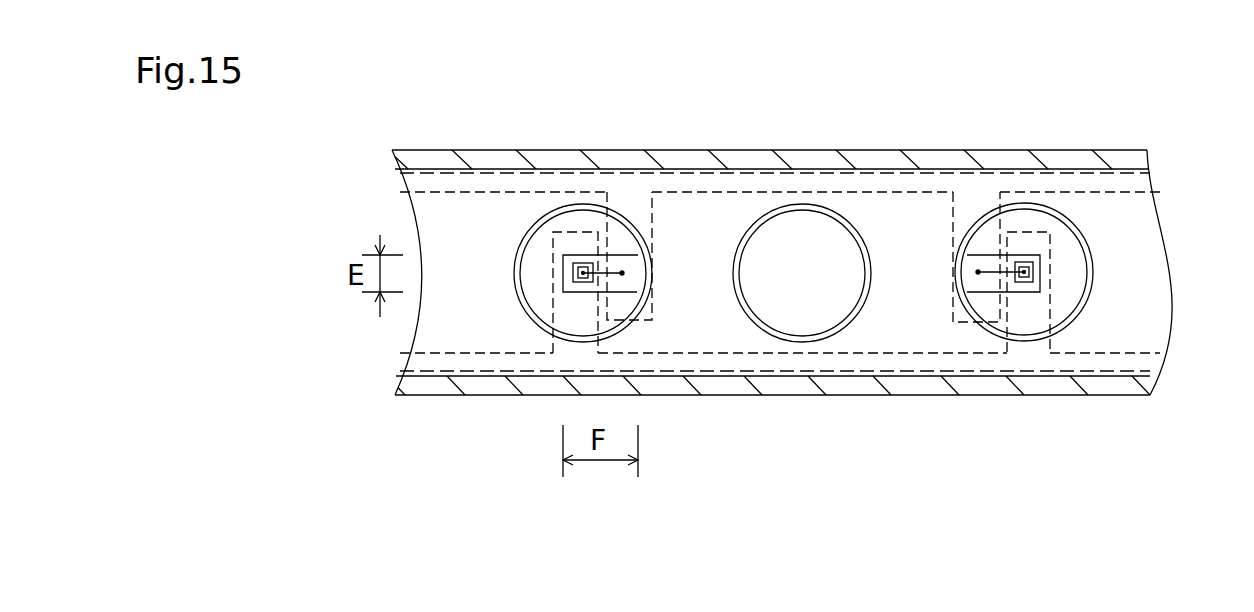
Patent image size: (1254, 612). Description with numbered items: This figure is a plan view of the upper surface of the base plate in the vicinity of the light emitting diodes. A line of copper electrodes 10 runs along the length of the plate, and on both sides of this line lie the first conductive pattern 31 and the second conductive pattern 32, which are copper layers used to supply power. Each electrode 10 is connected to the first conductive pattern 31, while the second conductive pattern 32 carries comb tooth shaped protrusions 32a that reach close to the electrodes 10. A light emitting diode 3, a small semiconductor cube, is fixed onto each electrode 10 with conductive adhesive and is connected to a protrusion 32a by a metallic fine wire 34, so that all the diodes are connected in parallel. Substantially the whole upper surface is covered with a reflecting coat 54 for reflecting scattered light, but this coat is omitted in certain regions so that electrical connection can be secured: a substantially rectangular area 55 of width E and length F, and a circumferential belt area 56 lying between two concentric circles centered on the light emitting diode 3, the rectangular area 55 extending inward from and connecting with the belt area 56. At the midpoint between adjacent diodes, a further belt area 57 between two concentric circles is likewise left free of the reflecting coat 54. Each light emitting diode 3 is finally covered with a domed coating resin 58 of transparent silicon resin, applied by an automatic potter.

The light emitting diode 3 is at (588, 263).
The electrode 10 is at (578, 238).
The first conductive pattern 31 is at (733, 355).
The second conductive pattern 32 is at (752, 190).
The protrusion 32a is at (630, 207).
The metallic fine wire 34 is at (606, 274).
The reflecting coat 54 is at (732, 323).
The rectangular area 55 is at (633, 275).
The circumferential belt area 56 is at (532, 232).
The belt area 57 is at (850, 322).
The coating resin 58 is at (533, 290).